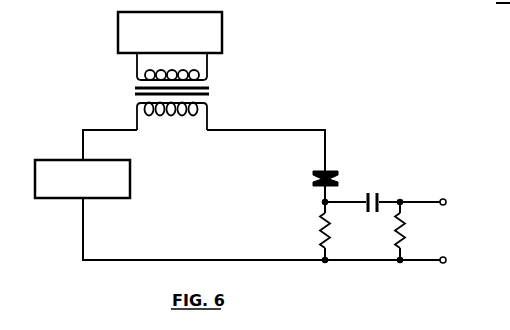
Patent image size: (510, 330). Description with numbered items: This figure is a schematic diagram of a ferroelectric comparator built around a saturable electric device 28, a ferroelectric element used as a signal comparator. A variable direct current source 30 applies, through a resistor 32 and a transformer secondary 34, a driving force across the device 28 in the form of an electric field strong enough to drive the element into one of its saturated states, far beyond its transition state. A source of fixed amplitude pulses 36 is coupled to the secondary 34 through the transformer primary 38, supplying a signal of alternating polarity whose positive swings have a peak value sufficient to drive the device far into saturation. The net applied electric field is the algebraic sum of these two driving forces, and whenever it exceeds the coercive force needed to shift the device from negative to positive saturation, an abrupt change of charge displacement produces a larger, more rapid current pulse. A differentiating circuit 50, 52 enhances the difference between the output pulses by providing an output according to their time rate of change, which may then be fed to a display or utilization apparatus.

The source of fixed amplitude pulses 36 is at (217, 37).
The primary 38 is at (193, 72).
The transformer secondary 34 is at (182, 117).
The source 30 is at (117, 188).
The saturable electric device 28 is at (340, 178).
The differentiating circuit 50 is at (380, 192).
The resistor 32 is at (331, 229).
The differentiating circuit 52 is at (406, 229).